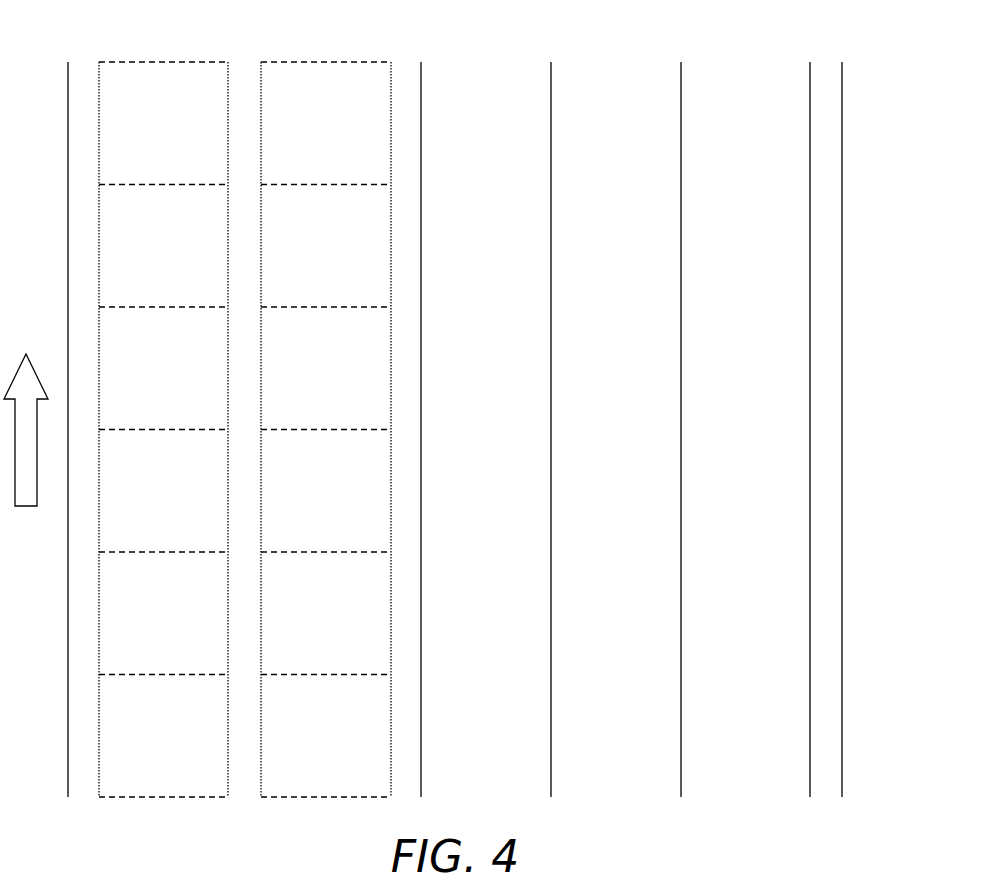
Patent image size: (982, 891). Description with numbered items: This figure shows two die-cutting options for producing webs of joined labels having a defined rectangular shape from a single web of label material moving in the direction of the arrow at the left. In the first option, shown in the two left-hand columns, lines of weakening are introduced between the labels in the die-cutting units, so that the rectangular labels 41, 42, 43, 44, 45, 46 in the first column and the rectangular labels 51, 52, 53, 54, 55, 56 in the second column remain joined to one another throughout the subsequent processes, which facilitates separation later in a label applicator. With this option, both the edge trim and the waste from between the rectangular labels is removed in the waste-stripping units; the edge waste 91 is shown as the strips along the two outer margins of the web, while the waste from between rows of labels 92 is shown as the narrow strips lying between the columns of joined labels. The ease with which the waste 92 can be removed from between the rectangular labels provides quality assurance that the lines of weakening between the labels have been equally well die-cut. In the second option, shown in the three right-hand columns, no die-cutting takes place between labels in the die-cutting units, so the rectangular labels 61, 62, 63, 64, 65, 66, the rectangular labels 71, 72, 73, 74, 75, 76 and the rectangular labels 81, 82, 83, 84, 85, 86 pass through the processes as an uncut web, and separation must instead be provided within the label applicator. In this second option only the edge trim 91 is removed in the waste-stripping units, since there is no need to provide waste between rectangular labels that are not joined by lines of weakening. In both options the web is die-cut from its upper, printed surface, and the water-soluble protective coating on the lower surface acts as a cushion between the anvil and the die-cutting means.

The rectangular label 41 is at (163, 123).
The rectangular label 42 is at (163, 246).
The rectangular label 43 is at (163, 368).
The rectangular label 44 is at (163, 491).
The rectangular label 45 is at (163, 613).
The rectangular label 46 is at (163, 736).
The rectangular label 51 is at (326, 123).
The rectangular label 52 is at (326, 246).
The rectangular label 53 is at (326, 368).
The rectangular label 54 is at (326, 491).
The rectangular label 55 is at (326, 613).
The rectangular label 56 is at (326, 736).
The rectangular label 61 is at (486, 123).
The rectangular label 62 is at (486, 246).
The rectangular label 63 is at (486, 368).
The rectangular label 64 is at (486, 491).
The rectangular label 65 is at (486, 613).
The rectangular label 66 is at (486, 736).
The rectangular label 71 is at (616, 123).
The rectangular label 72 is at (616, 246).
The rectangular label 73 is at (616, 368).
The rectangular label 74 is at (616, 491).
The rectangular label 75 is at (616, 613).
The rectangular label 76 is at (616, 736).
The rectangular label 81 is at (745, 123).
The rectangular label 82 is at (745, 246).
The rectangular label 83 is at (745, 368).
The rectangular label 84 is at (745, 491).
The rectangular label 85 is at (745, 613).
The rectangular label 86 is at (745, 736).
The edge waste 91 is at (75, 240).
The waste from between rows of labels 92 is at (243, 72).